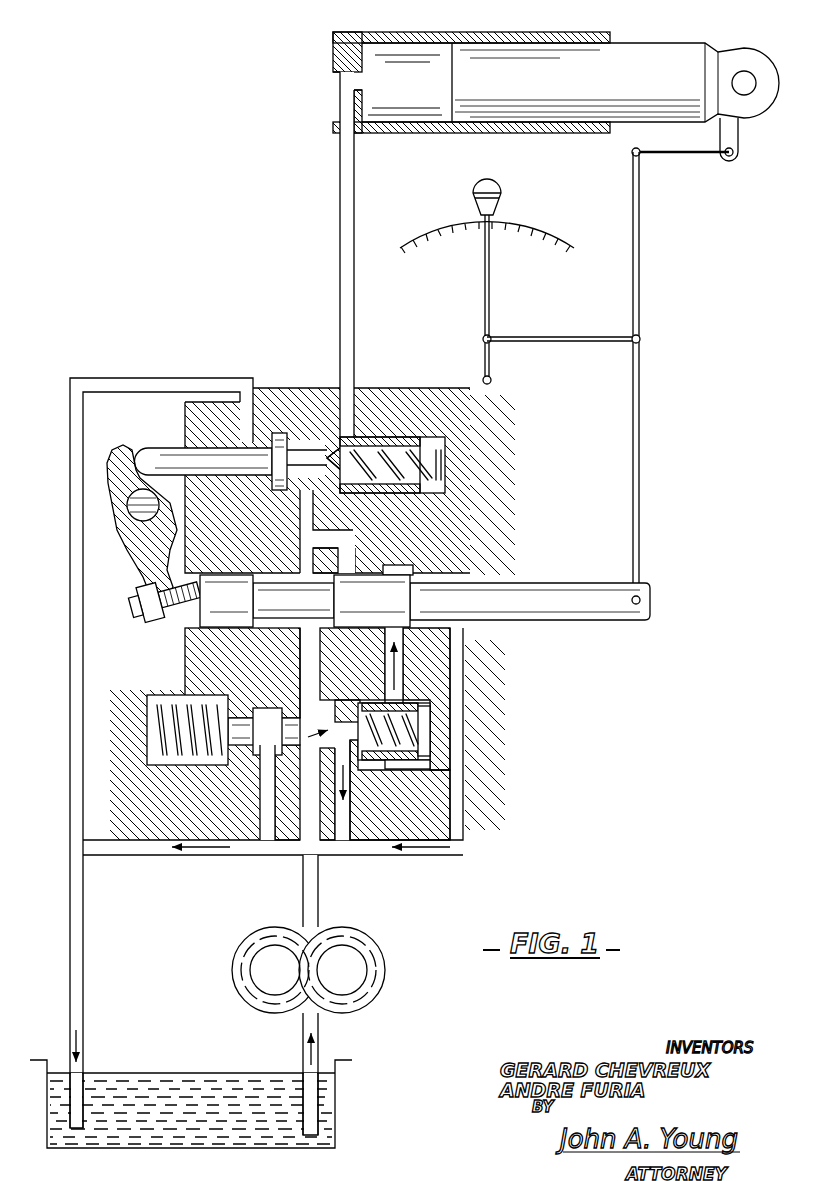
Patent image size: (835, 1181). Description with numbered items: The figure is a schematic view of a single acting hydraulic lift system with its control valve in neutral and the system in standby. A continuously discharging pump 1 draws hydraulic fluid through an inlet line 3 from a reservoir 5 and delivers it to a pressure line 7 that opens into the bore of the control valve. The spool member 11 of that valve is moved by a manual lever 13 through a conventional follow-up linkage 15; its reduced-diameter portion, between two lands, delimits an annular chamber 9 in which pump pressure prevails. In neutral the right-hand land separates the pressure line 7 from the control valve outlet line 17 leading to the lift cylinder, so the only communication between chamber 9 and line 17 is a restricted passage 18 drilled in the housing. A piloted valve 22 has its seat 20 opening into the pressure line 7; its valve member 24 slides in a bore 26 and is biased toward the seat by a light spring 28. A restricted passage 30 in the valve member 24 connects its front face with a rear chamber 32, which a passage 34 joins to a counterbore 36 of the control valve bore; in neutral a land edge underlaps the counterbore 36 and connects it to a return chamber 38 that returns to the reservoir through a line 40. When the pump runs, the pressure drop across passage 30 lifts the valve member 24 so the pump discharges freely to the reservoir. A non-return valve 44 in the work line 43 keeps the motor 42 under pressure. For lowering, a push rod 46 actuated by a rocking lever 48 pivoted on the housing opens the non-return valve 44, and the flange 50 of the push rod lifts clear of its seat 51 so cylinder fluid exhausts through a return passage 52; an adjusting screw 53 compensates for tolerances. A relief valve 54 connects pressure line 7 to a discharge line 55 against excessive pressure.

The pump 1 is at (268, 977).
The inlet line 3 is at (300, 1031).
The reservoir 5 is at (138, 1097).
The pressure line 7 is at (305, 688).
The annular chamber 9 is at (277, 626).
The spool member 11 is at (530, 598).
The manual lever 13 is at (489, 292).
The follow-up linkage 15 is at (642, 305).
The control valve outlet line 17 is at (345, 563).
The restricted passage 18 is at (340, 549).
The seat 20 is at (358, 768).
The piloted valve 22 is at (395, 780).
The valve member 24 is at (440, 780).
The bore 26 is at (400, 768).
The light spring 28 is at (432, 745).
The restricted passage 30 is at (368, 697).
The rear chamber 32 is at (425, 730).
The passage 34 is at (425, 700).
The counterbore 36 is at (440, 677).
The return chamber 38 is at (450, 654).
The line 40 is at (447, 853).
The motor 42 is at (398, 75).
The work line 43 is at (355, 212).
The non-return valve 44 is at (393, 434).
The push rod 46 is at (160, 462).
The rocking lever 48 is at (118, 460).
The flange 50 is at (280, 446).
The seat 51 is at (258, 430).
The return passage 52 is at (177, 385).
The adjusting screw 53 is at (137, 617).
The relief valve 54 is at (253, 742).
The discharge line 55 is at (267, 815).